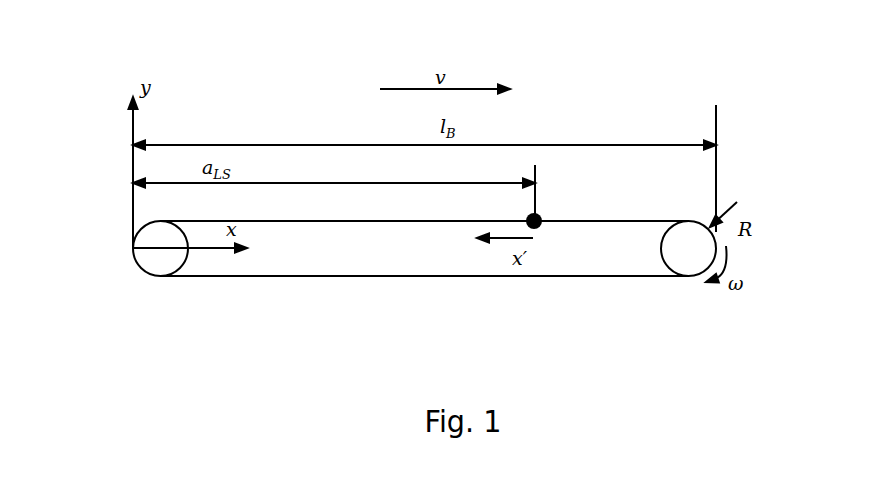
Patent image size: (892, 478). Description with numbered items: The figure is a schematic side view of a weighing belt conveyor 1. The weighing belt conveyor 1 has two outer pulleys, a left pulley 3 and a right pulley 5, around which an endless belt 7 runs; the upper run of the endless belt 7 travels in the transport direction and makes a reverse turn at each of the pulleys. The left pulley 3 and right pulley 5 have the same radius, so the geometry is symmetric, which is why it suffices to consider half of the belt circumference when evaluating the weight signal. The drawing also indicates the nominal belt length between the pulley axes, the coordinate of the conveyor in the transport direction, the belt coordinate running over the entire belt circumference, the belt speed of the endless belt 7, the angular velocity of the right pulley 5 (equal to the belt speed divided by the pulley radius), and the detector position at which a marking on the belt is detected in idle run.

The weighing belt conveyor 1 is at (596, 72).
The left pulley 3 is at (162, 276).
The right pulley 5 is at (690, 276).
The endless belt 7 is at (643, 220).